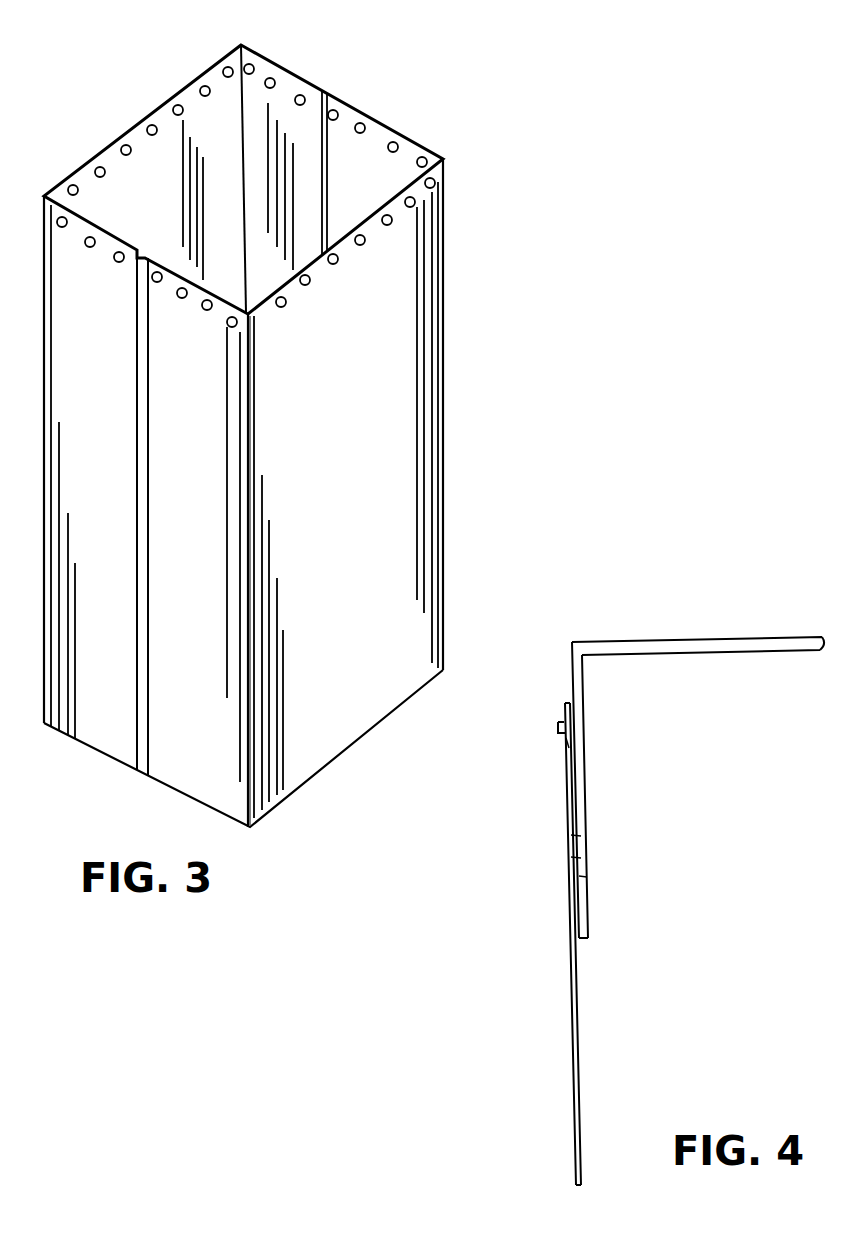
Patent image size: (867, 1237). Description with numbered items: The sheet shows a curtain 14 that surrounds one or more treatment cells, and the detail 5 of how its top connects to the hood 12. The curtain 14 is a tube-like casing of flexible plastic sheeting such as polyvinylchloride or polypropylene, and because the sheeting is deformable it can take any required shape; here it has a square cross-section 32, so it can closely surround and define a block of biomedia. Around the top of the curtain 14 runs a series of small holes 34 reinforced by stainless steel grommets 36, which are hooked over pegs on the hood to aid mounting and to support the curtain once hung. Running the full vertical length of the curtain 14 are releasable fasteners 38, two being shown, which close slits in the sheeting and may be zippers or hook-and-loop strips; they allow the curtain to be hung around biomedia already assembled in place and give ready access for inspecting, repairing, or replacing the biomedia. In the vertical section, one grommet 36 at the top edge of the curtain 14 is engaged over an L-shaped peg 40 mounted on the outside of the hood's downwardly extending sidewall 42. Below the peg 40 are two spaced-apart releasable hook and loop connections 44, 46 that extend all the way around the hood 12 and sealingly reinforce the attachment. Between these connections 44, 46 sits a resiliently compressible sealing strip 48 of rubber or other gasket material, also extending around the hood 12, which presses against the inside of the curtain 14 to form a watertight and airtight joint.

In FIG. 4, the view direction arrow 5 is at (560, 830).
In FIG. 4, the hood 12 is at (690, 637).
In FIG. 3, the curtain 14 is at (383, 423).
In FIG. 4, the curtain 14 is at (572, 1070).
In FIG. 3, the square cross-section 32 is at (150, 105).
In FIG. 3, the small holes 34 is at (284, 308).
In FIG. 3, the grommets 36 is at (309, 287).
In FIG. 4, the grommets 36 is at (560, 742).
In FIG. 3, the releasable fastener 38 is at (322, 187).
In FIG. 4, the peg 40 is at (560, 720).
In FIG. 4, the sidewall 42 is at (577, 707).
In FIG. 4, the releasable hook and loop connection 44 is at (578, 878).
In FIG. 4, the releasable hook and loop connection 46 is at (575, 837).
In FIG. 4, the sealing strip 48 is at (575, 858).